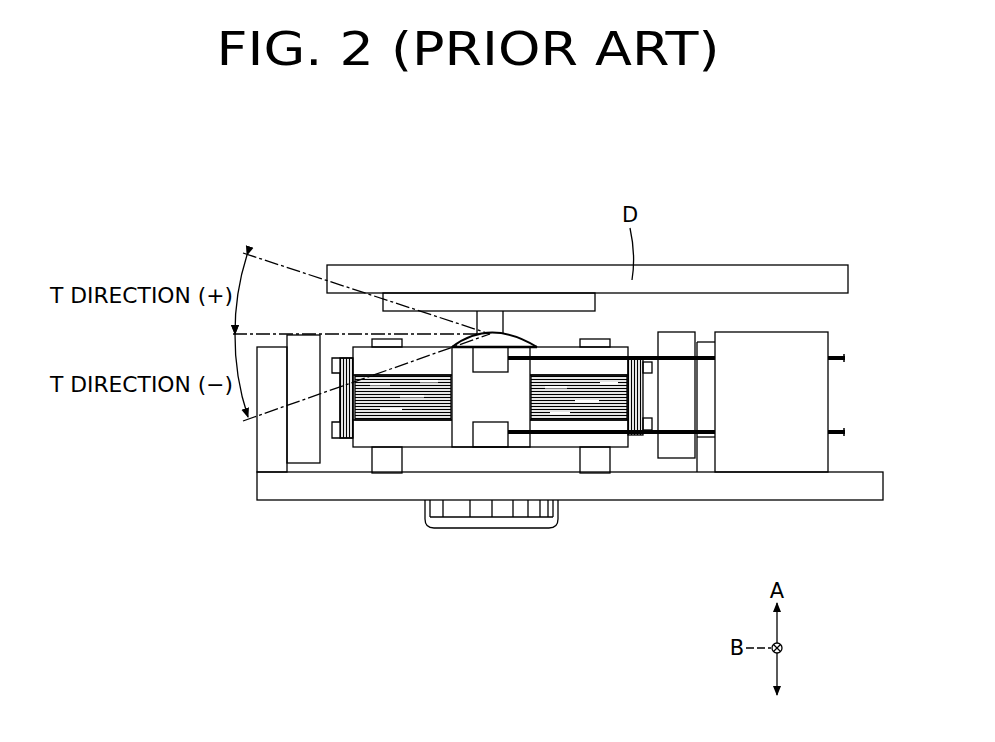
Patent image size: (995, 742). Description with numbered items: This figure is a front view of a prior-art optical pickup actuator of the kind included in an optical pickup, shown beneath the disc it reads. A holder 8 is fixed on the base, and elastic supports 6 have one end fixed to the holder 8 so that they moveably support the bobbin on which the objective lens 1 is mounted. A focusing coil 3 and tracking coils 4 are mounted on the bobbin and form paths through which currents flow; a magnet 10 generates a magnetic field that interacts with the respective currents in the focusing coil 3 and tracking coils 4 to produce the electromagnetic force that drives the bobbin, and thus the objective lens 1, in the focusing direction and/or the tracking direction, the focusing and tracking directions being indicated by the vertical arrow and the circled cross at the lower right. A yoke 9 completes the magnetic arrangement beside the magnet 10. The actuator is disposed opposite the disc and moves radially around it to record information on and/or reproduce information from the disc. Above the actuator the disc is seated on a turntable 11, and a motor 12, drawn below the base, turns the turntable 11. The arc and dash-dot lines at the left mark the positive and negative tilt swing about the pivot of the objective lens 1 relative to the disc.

The objective lens 1 is at (515, 341).
The focusing coil 3 is at (593, 420).
The tracking coils 4 is at (636, 357).
The elastic supports 6 is at (846, 361).
The holder 8 is at (778, 455).
The yoke 9 is at (265, 452).
The magnet 10 is at (300, 452).
The turntable 11 is at (542, 300).
The motor 12 is at (473, 520).